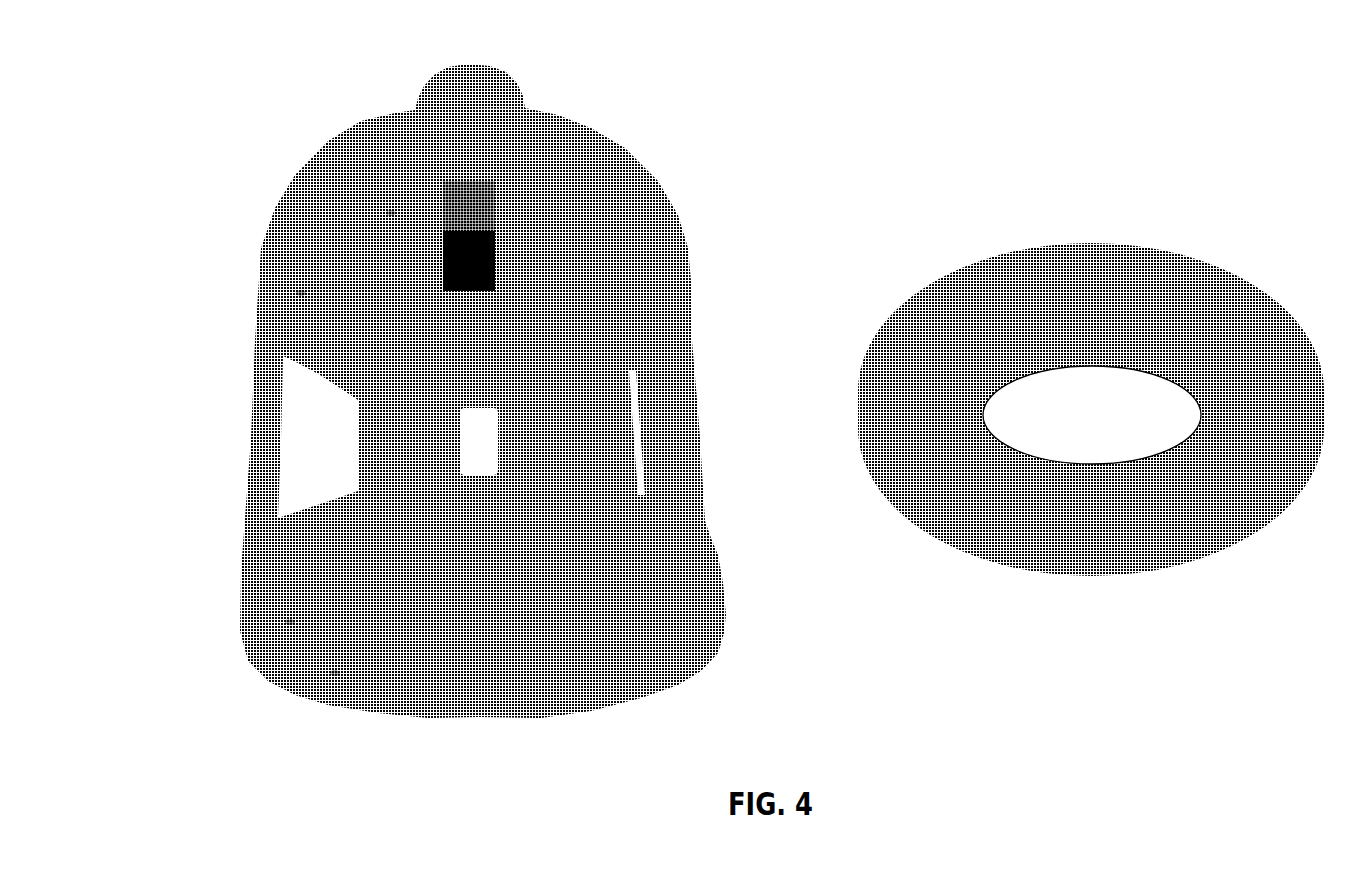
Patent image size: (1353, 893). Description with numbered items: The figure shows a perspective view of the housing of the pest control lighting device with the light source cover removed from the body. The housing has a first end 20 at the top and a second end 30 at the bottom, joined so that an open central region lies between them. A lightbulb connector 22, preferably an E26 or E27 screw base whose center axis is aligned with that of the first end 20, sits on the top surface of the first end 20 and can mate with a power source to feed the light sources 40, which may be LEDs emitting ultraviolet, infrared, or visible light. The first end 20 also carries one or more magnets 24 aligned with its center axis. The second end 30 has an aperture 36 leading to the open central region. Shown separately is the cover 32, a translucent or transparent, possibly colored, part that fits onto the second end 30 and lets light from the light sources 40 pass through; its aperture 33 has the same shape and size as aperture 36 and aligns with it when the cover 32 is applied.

The first end 20 is at (348, 142).
The lightbulb connector 22 is at (517, 82).
The magnet 24 is at (487, 240).
The second end 30 is at (692, 548).
The cover 32 is at (995, 262).
The aperture 33 is at (1140, 340).
The aperture 36 is at (533, 647).
The light source 40 is at (383, 203).